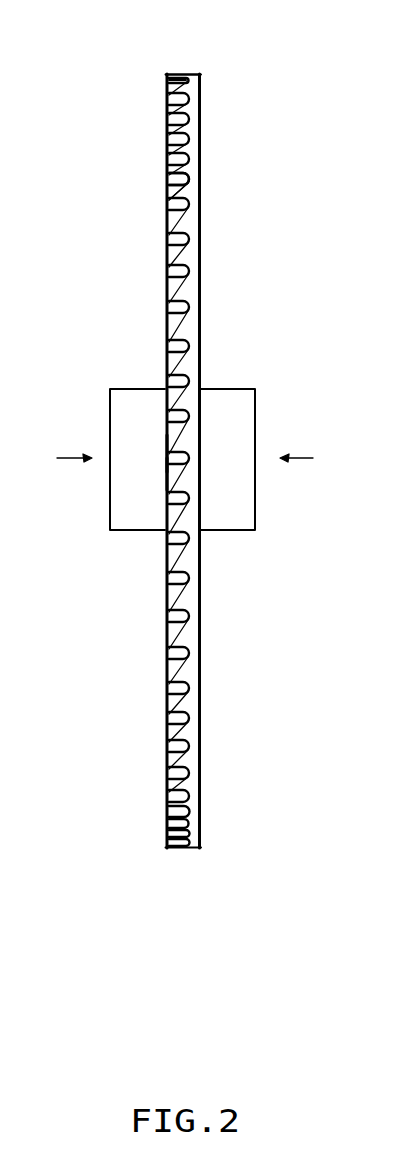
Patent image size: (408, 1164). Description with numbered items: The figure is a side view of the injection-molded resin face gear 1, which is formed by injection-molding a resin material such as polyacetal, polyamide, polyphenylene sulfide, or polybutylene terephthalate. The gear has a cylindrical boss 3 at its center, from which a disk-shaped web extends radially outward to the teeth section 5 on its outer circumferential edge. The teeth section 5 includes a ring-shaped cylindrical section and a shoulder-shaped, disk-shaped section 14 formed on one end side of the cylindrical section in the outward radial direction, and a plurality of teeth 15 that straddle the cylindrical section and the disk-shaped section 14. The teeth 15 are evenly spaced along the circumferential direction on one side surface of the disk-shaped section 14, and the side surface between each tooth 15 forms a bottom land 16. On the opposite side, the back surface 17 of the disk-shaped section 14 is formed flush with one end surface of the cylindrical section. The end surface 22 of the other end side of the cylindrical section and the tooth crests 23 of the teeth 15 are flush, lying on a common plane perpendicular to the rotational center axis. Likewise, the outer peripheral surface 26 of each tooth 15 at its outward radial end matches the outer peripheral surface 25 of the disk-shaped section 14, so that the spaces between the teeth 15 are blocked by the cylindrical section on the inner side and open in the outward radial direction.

The injection-molded resin face gear 1 is at (243, 128).
The cylindrical boss 3 is at (130, 389).
The teeth section 5 is at (163, 92).
The disk-shaped section 14 is at (201, 323).
The teeth 15 is at (167, 442).
The bottom land 16 is at (167, 465).
The back surface 17 is at (201, 97).
The end surface 22 is at (166, 173).
The tooth crests 23 is at (166, 182).
The outer peripheral surface of the disk-shaped section 25 is at (197, 73).
The outer peripheral surface of the teeth 26 is at (176, 74).